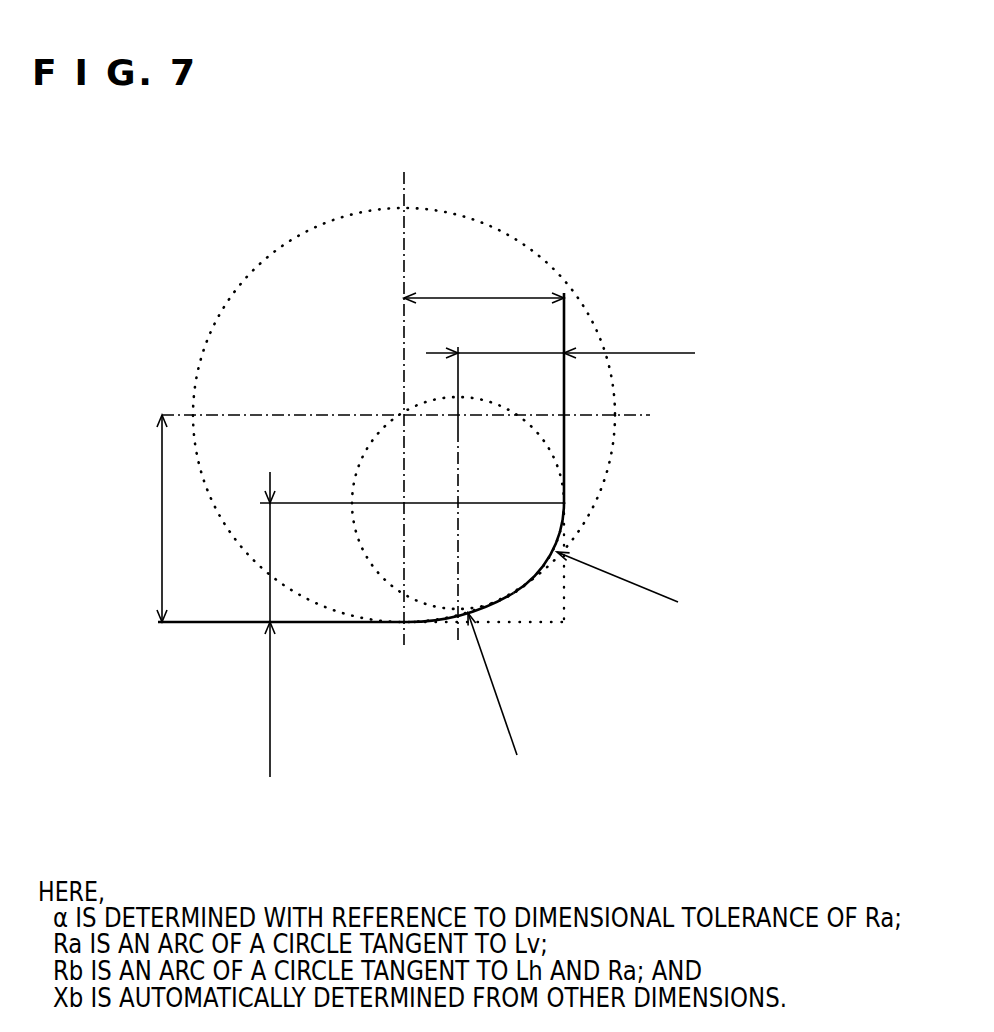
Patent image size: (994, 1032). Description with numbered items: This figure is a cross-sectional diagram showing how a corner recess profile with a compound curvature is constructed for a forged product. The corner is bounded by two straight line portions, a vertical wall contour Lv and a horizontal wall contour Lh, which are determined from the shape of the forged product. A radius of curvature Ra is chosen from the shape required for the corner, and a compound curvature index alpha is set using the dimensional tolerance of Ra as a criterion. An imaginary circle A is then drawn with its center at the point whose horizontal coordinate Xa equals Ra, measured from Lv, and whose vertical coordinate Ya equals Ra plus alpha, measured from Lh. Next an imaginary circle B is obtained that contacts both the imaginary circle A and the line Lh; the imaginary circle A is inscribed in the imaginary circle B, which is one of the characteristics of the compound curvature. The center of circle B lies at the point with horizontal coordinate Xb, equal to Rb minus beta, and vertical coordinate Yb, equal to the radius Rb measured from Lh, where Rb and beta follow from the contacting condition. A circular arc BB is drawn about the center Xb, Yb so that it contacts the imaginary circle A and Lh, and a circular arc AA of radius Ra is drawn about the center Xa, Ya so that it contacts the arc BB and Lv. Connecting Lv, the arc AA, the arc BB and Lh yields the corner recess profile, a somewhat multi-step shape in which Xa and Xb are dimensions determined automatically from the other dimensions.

The imaginary circle A is at (362, 462).
The imaginary circle B is at (258, 267).
The circular arc AA is at (530, 593).
The circular arc BB is at (427, 640).
The vertical straight line portion Lv is at (563, 453).
The horizontal straight line portion Lh is at (312, 622).
The radius of curvature Ra is at (617, 576).
The radius of curvature Rb is at (491, 684).
The horizontal center coordinate Xa is at (560, 343).
The horizontal center coordinate Xb is at (484, 286).
The vertical center coordinate Ya is at (260, 624).
The vertical center coordinate Yb is at (152, 518).